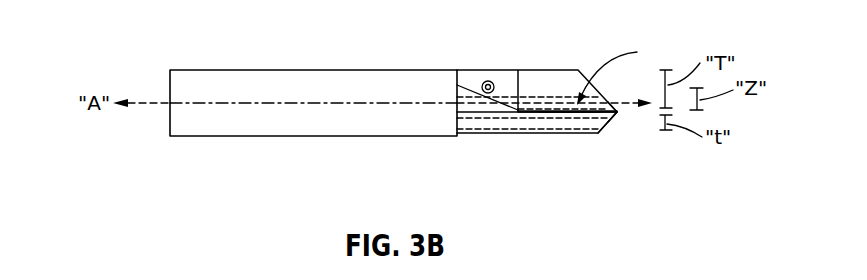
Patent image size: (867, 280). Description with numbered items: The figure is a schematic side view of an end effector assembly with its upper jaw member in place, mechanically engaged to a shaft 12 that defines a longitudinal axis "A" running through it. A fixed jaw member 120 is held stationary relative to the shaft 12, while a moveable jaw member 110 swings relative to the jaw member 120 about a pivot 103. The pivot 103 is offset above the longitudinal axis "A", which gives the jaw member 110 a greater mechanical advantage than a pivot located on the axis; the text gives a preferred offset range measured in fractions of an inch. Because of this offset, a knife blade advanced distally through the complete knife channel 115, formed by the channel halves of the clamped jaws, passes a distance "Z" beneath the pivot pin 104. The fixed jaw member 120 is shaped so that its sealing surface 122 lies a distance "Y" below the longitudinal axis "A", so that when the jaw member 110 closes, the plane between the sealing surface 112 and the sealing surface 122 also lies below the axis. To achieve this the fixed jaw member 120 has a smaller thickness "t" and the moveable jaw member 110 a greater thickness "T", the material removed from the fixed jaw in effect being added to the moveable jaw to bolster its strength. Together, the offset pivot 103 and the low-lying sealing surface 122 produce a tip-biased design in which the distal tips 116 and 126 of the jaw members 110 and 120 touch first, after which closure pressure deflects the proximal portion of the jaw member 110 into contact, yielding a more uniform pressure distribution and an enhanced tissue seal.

The shaft 12 is at (305, 137).
The pivot 103 is at (488, 93).
The pivot pin 104 is at (487, 81).
The jaw member 110 is at (543, 70).
The sealing surface 112 is at (527, 110).
The knife channel 115 is at (627, 71).
The distal tip 116 is at (619, 110).
The jaw member 120 is at (553, 134).
The sealing surface 122 is at (553, 112).
The distal tip 126 is at (618, 115).